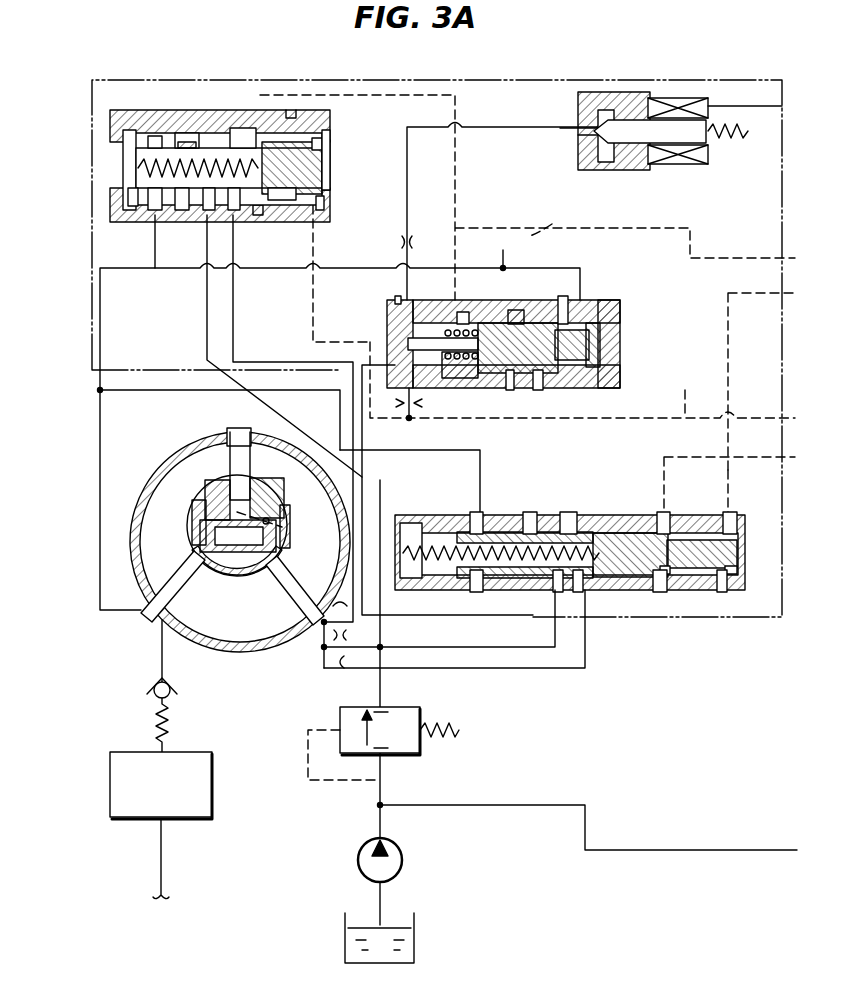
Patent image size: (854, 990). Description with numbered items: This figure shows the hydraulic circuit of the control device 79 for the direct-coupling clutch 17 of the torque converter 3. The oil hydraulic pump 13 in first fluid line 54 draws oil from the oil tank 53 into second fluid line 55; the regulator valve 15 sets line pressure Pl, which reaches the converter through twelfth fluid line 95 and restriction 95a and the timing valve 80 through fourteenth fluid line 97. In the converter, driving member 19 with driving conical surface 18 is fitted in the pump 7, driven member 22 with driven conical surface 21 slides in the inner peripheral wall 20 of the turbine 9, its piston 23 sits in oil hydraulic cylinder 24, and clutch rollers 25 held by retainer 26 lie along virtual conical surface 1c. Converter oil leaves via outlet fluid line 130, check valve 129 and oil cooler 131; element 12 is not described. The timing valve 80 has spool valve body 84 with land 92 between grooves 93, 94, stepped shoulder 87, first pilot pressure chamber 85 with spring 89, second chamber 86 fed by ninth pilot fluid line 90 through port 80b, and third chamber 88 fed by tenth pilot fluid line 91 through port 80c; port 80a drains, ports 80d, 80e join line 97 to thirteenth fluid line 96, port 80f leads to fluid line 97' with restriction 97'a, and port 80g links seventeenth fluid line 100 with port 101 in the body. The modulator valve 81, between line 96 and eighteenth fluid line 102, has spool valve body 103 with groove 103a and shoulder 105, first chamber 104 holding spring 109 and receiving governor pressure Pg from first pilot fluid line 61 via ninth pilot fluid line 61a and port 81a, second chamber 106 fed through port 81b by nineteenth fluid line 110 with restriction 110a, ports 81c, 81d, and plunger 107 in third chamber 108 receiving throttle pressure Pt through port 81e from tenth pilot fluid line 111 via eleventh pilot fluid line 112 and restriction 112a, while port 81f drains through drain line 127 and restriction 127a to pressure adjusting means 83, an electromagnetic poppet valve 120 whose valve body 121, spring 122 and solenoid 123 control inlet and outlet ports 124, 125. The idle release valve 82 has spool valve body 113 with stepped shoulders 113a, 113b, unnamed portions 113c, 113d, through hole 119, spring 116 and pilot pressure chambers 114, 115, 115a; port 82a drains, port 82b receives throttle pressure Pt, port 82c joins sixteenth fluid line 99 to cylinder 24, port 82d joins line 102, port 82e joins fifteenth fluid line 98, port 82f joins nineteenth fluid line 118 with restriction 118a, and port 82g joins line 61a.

The control device 79 is at (600, 82).
The first pilot fluid line 61 is at (612, 228).
The nineteenth fluid line 110 is at (565, 278).
The ninth pilot fluid line 90 is at (728, 332).
The tenth pilot fluid line 91 is at (728, 460).
The tenth pilot fluid line 111 is at (318, 240).
The throttle pressure Pt is at (682, 392).
The governor pressure Pg is at (554, 220).
The sixteenth fluid line 99 is at (100, 322).
The eighteenth fluid line 102 is at (320, 268).
The eleventh pilot fluid line 112 is at (353, 415).
The restriction 112a is at (397, 405).
The spring 109 is at (426, 404).
The seventeenth fluid line 100 is at (400, 452).
The fifteenth fluid line 98 is at (207, 332).
The nineteenth fluid line 118 is at (233, 322).
The fifth port 81e is at (395, 360).
The sixth port 82f is at (266, 212).
The restriction 110a is at (531, 260).
The drain line 127 is at (407, 215).
The restriction 127a is at (424, 240).
The ninth pilot fluid line 61a is at (455, 200).
The idle release valve 82 is at (164, 100).
The first pilot pressure chamber 114 is at (125, 140).
The spool valve body 113 is at (322, 160).
The spring 116 is at (138, 162).
The through hole 119 is at (152, 136).
The land 113d is at (185, 136).
The land 113c is at (242, 132).
The first stepped shoulder 113a is at (322, 146).
The seventh port 82g is at (290, 118).
The second pilot pressure chamber 115 is at (330, 135).
The second port 82b is at (322, 205).
The second stepped shoulder 113b is at (316, 208).
The third pilot pressure chamber 115a is at (260, 208).
The first port 82a is at (130, 205).
The third port 82c is at (155, 210).
The fourth port 82d is at (178, 210).
The fifth port 82e is at (210, 210).
The electromagnetic poppet valve 120 is at (690, 150).
The inlet port 124 is at (596, 126).
The outlet port 125 is at (600, 150).
The valve body 121 is at (650, 160).
The solenoid 123 is at (672, 165).
The spring 122 is at (748, 130).
The pressure adjusting means 83 is at (706, 170).
The modulator valve 81 is at (617, 313).
The sixth port 81f is at (392, 320).
The plunger 107 is at (418, 338).
The third pilot pressure chamber 108 is at (408, 340).
The first pilot pressure chamber 104 is at (465, 370).
The spool valve body 103 is at (590, 345).
The first port 81a is at (460, 322).
The fourth port 81d is at (518, 318).
The second port 81b is at (568, 322).
The stepped shoulder 105 is at (618, 300).
The annular groove 103a is at (515, 388).
The third port 81c is at (548, 385).
The second pilot pressure chamber 106 is at (575, 385).
The timing valve 80 is at (643, 505).
The first pilot pressure chamber 85 is at (418, 528).
The spring 89 is at (435, 528).
The spool valve body 84 is at (610, 590).
The second pilot pressure chamber 86 is at (730, 585).
The third pilot pressure chamber 88 is at (650, 585).
The stepped shoulder 87 is at (660, 585).
The seventh port 80g is at (470, 525).
The fifth port 80e is at (525, 525).
The port 101 is at (503, 528).
The thirteenth fluid line 96 is at (567, 525).
The annular groove 93 is at (543, 528).
The land 92 is at (578, 530).
The annular groove 94 is at (612, 530).
The third port 80c is at (665, 520).
The second port 80b is at (730, 520).
The first port 80a is at (412, 578).
The fourth port 80d is at (556, 590).
The sixth port 80f is at (585, 590).
The pump 7 is at (345, 572).
The torque converter 3 is at (190, 442).
The turbine 9 is at (178, 475).
The inner peripheral wall 20 is at (188, 485).
The annular driving member 19 is at (242, 490).
The direct-coupling clutch 17 is at (222, 490).
The driving conical surface 18 is at (275, 512).
The piston 23 is at (205, 512).
The oil hydraulic cylinder 24 is at (202, 540).
The clutch rollers 25 is at (280, 528).
The virtual conical surface 1c is at (285, 528).
The driven conical surface 21 is at (250, 572).
The annular driven member 22 is at (230, 565).
The annular retainer 26 is at (270, 565).
The outlet fluid line 130 is at (150, 680).
The check valve 129 is at (150, 715).
The casing 12 is at (225, 648).
The oil cooler 131 is at (112, 778).
The fourteenth fluid line 97 is at (439, 629).
The fluid line 97' is at (479, 646).
The restriction 95a is at (352, 636).
The restriction 118a is at (322, 624).
The restriction 97'a is at (340, 679).
The twelfth fluid line 95 is at (385, 700).
The regulator valve 15 is at (405, 755).
The first fluid line 54 is at (378, 828).
The oil hydraulic pump 13 is at (403, 862).
The oil tank 53 is at (415, 946).
The second fluid line 55 is at (745, 852).
The line pressure Pl is at (643, 852).